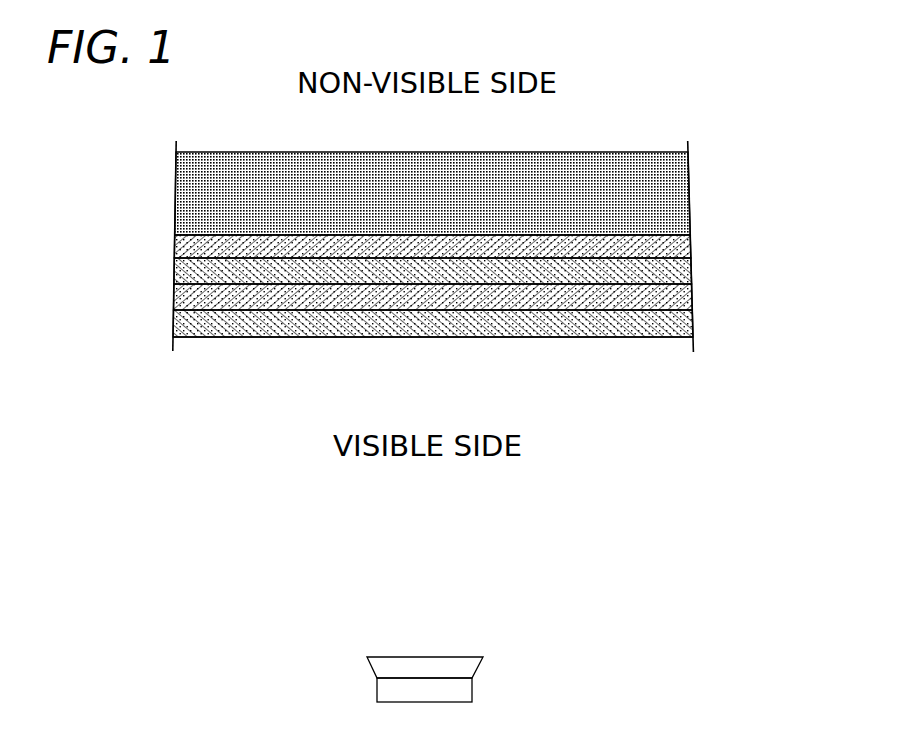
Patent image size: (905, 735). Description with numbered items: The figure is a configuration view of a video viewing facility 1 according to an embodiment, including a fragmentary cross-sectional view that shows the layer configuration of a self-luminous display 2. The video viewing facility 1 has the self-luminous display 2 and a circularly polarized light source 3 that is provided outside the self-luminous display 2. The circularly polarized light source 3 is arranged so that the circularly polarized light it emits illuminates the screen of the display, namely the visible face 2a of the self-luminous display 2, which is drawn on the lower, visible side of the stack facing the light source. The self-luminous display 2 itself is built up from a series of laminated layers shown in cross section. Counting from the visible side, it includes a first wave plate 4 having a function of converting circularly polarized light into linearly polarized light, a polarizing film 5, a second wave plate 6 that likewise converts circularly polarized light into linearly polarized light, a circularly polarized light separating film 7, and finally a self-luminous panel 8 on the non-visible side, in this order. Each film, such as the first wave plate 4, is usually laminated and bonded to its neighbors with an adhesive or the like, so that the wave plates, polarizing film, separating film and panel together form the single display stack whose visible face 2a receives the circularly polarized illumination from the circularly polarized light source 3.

The video viewing facility 1 is at (692, 609).
The self-luminous display 2 is at (495, 269).
The visible face 2a is at (380, 338).
The circularly polarized light source 3 is at (455, 688).
The first wave plate 4 is at (662, 325).
The polarizing film 5 is at (672, 300).
The second wave plate 6 is at (662, 272).
The circularly polarized light separating film 7 is at (672, 245).
The self-luminous panel 8 is at (670, 197).